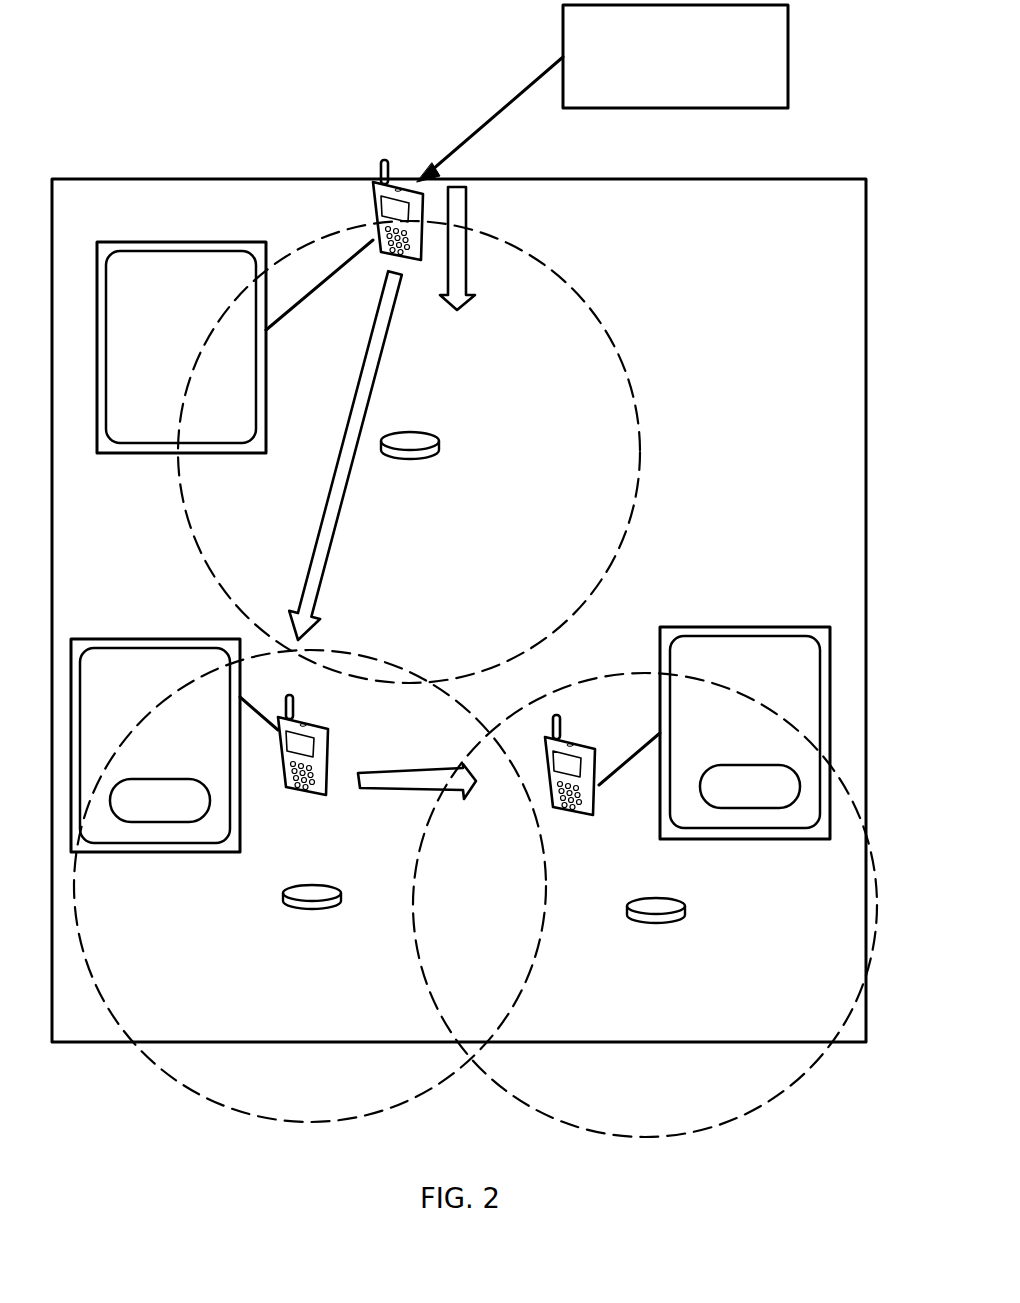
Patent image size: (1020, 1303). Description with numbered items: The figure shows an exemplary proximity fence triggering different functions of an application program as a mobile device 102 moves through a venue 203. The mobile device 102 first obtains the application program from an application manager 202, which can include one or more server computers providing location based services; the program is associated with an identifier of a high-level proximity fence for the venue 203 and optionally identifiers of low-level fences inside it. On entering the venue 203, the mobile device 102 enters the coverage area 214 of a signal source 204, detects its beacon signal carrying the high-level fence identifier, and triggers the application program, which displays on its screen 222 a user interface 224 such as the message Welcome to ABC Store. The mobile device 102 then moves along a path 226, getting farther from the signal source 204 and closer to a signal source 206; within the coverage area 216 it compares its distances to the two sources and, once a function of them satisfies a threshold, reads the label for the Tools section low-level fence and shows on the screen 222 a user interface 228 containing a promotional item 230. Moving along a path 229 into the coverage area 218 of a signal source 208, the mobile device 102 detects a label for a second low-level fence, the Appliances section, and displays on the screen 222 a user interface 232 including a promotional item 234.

The mobile device 102 is at (382, 160).
The application manager 202 is at (563, 32).
The venue 203 is at (255, 178).
The signal source 204 is at (440, 445).
The signal source 206 is at (308, 908).
The signal source 208 is at (685, 917).
The coverage area 214 is at (630, 350).
The coverage area 216 is at (167, 1063).
The coverage area 218 is at (782, 1092).
The screen 222 is at (130, 242).
The user interface 224 is at (178, 443).
The path 226 is at (322, 505).
The user interface 228 is at (132, 648).
The path 229 is at (388, 791).
The promotional item 230 is at (183, 822).
The user interface 232 is at (742, 637).
The promotional item 234 is at (787, 808).